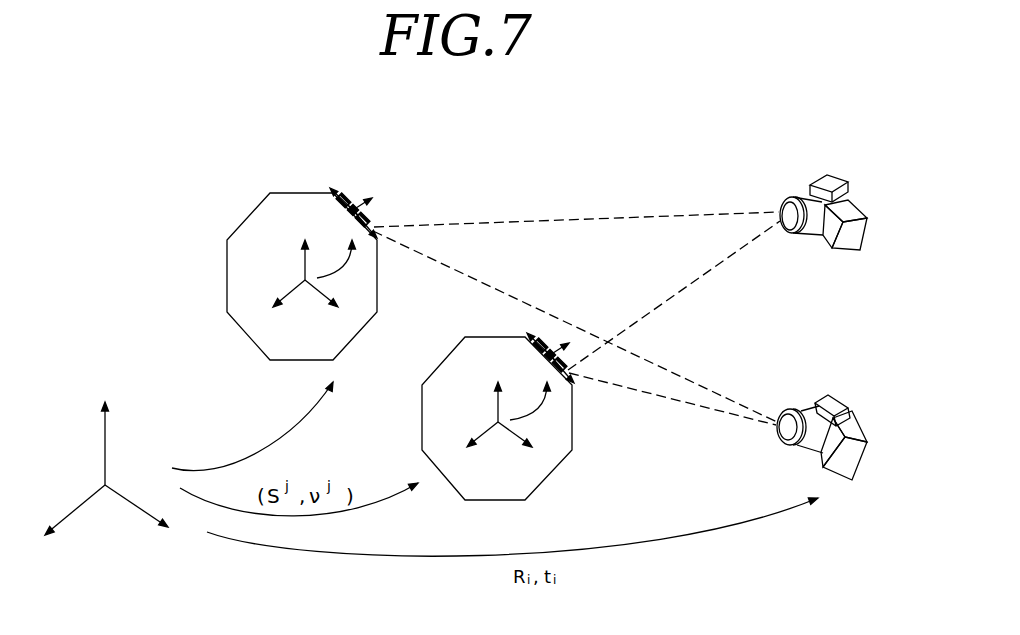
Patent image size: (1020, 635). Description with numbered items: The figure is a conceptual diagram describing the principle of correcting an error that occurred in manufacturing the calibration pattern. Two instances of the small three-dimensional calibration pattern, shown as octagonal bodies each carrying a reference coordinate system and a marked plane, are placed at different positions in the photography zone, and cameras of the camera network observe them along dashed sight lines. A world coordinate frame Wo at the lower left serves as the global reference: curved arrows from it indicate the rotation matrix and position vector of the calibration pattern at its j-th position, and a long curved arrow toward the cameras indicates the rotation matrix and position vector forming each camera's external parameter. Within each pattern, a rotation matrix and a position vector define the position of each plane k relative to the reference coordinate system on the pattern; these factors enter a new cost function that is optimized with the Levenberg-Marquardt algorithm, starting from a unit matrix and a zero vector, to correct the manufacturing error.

The world coordinate system Wo is at (106, 473).